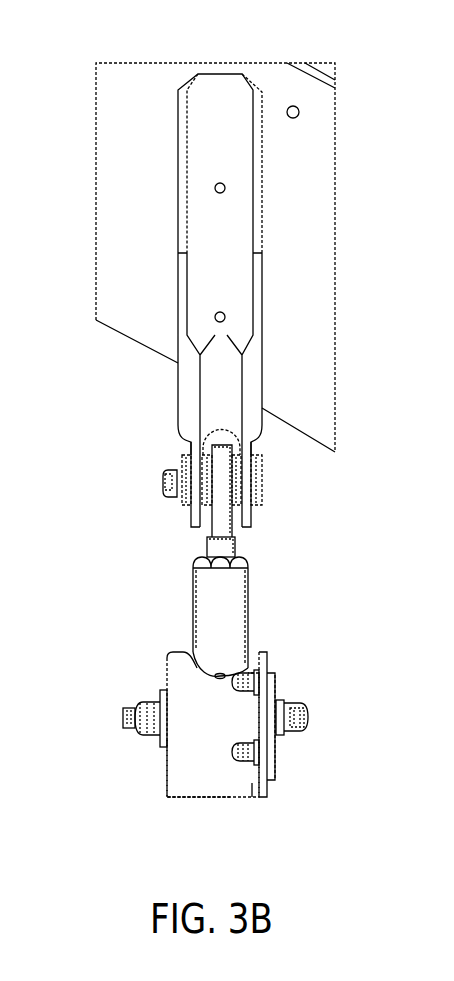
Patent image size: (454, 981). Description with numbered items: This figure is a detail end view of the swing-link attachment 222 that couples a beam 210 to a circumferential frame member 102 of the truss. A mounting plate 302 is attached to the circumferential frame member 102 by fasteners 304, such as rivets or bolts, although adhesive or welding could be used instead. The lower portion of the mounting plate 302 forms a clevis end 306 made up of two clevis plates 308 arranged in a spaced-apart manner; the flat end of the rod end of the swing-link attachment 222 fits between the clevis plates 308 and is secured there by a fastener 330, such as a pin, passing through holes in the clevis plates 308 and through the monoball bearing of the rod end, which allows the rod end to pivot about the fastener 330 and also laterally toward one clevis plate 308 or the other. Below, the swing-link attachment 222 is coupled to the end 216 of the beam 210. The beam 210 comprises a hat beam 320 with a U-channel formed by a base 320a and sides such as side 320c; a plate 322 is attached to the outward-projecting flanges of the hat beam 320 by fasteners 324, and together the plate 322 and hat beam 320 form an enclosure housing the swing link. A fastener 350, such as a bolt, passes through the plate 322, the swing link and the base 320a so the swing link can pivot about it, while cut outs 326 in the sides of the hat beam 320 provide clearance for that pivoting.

The circumferential frame member 102 is at (132, 77).
The mounting plate 302 is at (243, 233).
The fasteners 304 is at (225, 189).
The clevis end 306 is at (145, 435).
The clevis plates 308 is at (193, 517).
The fastener 330 is at (285, 479).
The swing-link attachment 222 is at (172, 594).
The cut outs 326 is at (188, 652).
The hat beam 320 is at (190, 742).
The base 320a is at (167, 780).
The side 320c is at (198, 785).
The end of the beam 216 is at (262, 652).
The plate 322 is at (268, 660).
The beam 210 is at (252, 787).
The fasteners 324 is at (255, 682).
The fastener 350 is at (320, 718).